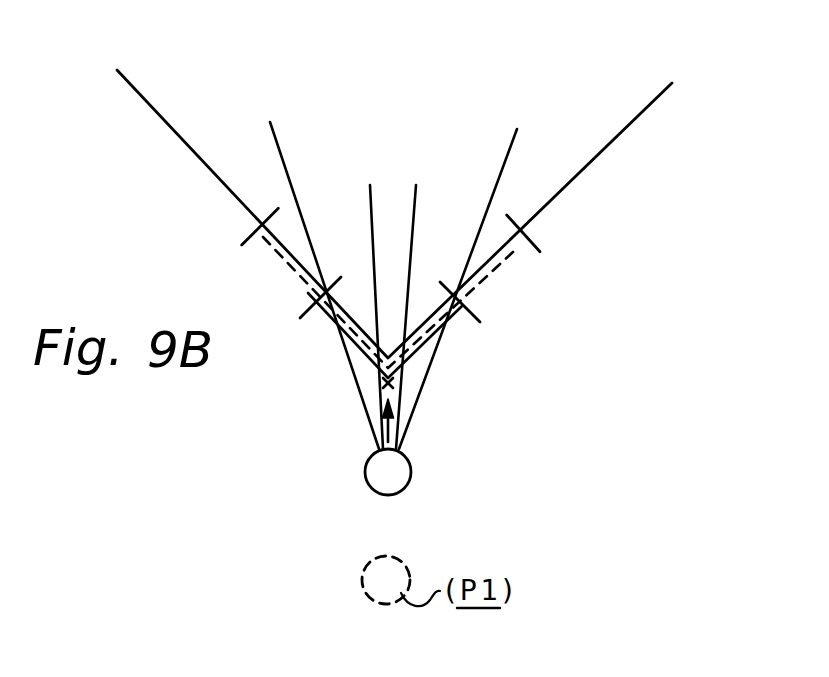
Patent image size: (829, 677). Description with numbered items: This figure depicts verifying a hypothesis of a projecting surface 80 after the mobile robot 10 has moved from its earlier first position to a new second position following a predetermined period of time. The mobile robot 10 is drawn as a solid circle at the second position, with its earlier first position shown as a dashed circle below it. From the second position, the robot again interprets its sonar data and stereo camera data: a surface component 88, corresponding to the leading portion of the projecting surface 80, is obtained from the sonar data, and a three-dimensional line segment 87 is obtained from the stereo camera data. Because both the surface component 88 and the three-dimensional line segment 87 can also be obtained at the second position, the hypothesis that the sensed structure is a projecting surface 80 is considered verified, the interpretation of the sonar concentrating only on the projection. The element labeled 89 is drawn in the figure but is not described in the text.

The projecting surface 80 is at (645, 158).
The three-dimensional line segment 87 is at (458, 314).
The surface component 88 is at (402, 449).
The reflective layer 89 is at (510, 254).
The mobile robot 10 is at (562, 502).